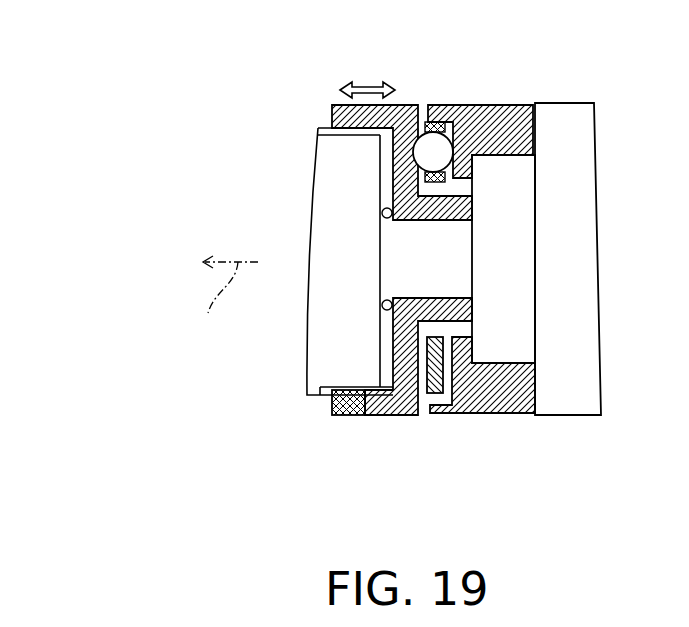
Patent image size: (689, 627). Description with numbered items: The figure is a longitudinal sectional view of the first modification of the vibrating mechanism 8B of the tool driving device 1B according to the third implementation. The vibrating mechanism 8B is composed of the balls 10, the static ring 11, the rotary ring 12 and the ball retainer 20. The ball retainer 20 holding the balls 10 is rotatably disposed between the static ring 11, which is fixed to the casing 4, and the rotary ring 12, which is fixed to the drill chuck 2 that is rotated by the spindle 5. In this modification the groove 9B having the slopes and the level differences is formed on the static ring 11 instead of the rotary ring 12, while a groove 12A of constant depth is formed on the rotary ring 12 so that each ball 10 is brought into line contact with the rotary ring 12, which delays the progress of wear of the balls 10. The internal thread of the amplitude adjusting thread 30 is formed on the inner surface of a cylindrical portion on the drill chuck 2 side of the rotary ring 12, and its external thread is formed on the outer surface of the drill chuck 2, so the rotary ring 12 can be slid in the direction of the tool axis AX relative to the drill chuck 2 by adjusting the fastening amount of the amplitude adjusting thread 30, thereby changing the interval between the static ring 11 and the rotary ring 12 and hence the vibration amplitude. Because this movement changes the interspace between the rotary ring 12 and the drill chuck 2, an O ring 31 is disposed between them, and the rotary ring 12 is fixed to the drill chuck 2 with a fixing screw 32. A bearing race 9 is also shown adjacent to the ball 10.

The tool driving device 1B is at (145, 148).
The drill chuck 2 is at (312, 395).
The casing 4 is at (570, 418).
The spindle 5 is at (400, 262).
The vibrating mechanism 8B is at (510, 100).
The bearing race 9 is at (445, 125).
The groove 9B is at (447, 365).
The ball 10 is at (433, 145).
The static ring 11 is at (505, 415).
The rotary ring 12 is at (400, 418).
The groove 12A is at (420, 360).
The ball retainer 20 is at (405, 352).
The amplitude adjusting thread 30 is at (347, 139).
The O ring 31 is at (382, 212).
The fixing screw 32 is at (355, 415).
The tool axis AX is at (221, 307).